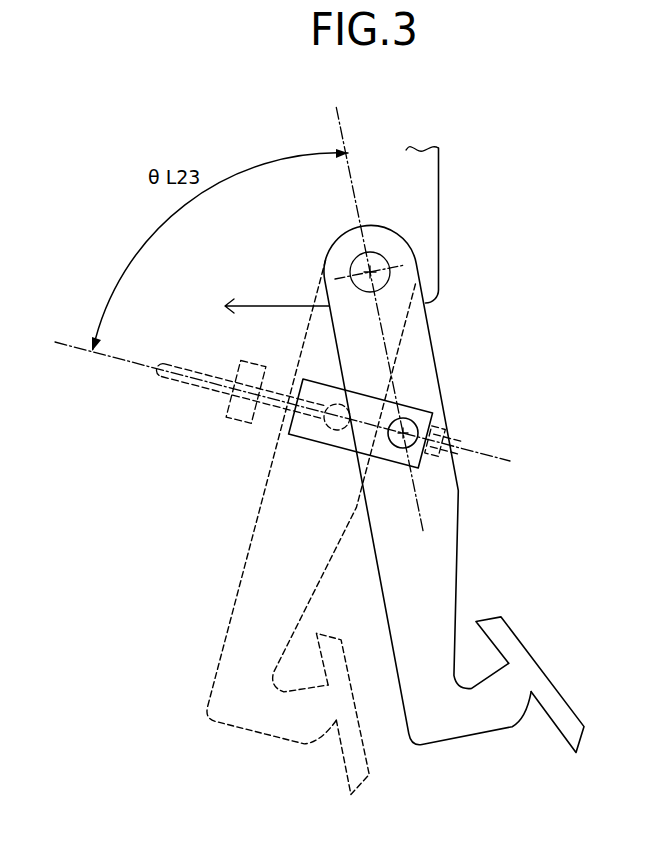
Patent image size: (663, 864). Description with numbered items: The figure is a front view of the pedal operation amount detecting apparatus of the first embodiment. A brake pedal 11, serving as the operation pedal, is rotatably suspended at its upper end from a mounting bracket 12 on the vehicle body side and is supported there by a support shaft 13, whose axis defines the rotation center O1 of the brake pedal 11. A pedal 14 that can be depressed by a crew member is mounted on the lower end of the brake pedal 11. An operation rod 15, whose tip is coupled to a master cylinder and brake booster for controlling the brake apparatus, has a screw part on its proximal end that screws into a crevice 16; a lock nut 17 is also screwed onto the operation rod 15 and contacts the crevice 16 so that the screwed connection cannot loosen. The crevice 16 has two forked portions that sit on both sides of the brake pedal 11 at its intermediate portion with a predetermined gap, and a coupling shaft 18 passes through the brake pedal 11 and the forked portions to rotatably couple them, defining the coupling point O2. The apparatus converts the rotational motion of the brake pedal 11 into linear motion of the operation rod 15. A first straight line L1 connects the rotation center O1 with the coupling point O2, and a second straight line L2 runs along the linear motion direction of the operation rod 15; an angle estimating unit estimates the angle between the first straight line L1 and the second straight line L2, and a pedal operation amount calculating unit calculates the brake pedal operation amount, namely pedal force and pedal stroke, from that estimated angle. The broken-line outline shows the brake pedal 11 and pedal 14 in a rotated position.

The brake pedal 11 is at (470, 537).
The mounting bracket 12 is at (438, 215).
The support shaft 13 is at (419, 272).
The pedal 14 is at (533, 660).
The operation rod 15 is at (185, 361).
The crevice 16 is at (270, 428).
The lock nut 17 is at (322, 383).
The coupling shaft 18 is at (423, 444).
The rotation center O1 is at (356, 257).
The coupling point O2 is at (433, 413).
The first straight line L1 is at (345, 135).
The second straight line L2 is at (106, 357).